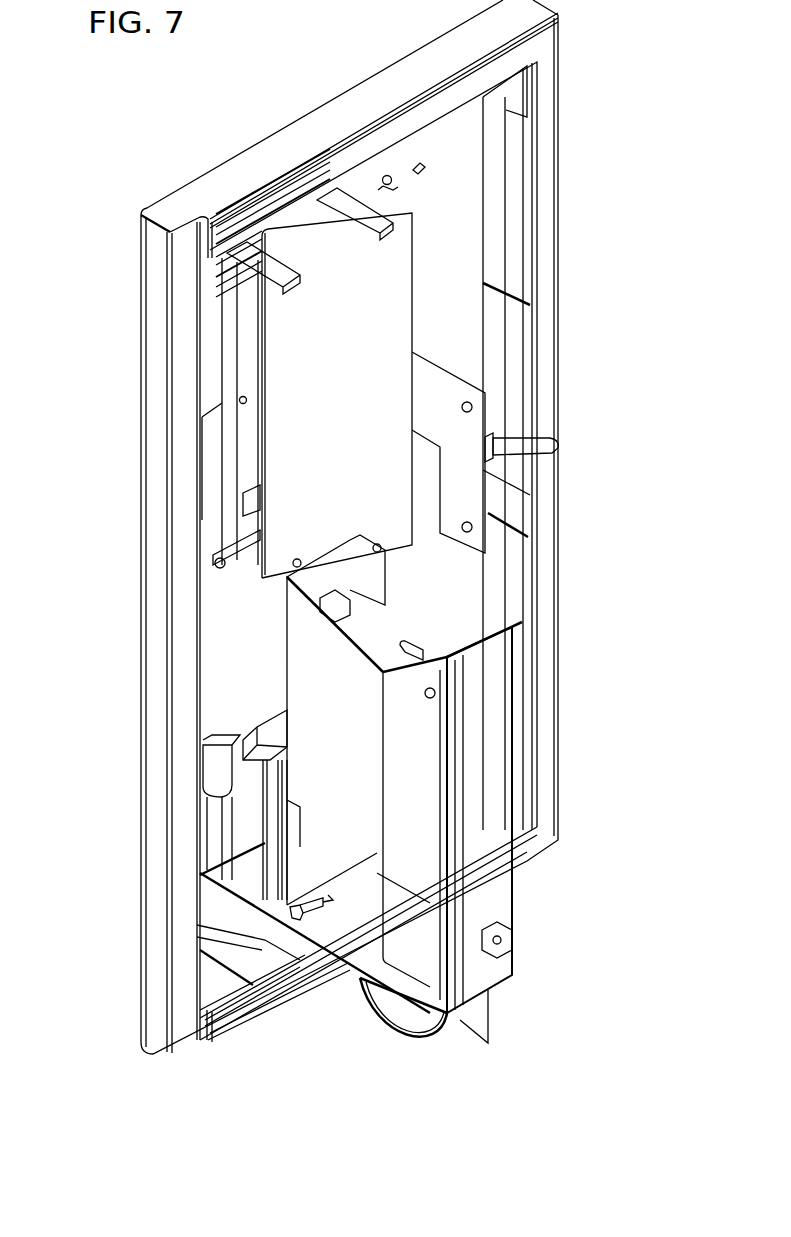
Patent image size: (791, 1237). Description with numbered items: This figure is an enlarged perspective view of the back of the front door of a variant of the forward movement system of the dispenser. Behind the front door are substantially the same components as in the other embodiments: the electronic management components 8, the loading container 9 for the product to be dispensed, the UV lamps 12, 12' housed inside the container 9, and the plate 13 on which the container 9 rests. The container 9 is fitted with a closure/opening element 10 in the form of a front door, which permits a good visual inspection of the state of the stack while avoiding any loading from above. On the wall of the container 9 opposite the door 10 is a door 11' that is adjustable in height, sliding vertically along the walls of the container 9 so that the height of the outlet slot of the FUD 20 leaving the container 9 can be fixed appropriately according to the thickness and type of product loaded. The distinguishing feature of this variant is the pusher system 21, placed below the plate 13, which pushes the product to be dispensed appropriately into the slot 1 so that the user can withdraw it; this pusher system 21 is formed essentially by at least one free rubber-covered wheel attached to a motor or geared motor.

The slot 1 is at (217, 872).
The electronic management components 8 is at (247, 462).
The loading container 9 is at (310, 692).
The closure/opening element 10 is at (498, 843).
The height-adjustable door 11' is at (178, 805).
The UV lamp 12 is at (149, 807).
The UV lamp 12' is at (280, 998).
The plate 13 is at (388, 980).
The FUD 20 is at (272, 858).
The pusher system 21 is at (447, 1027).